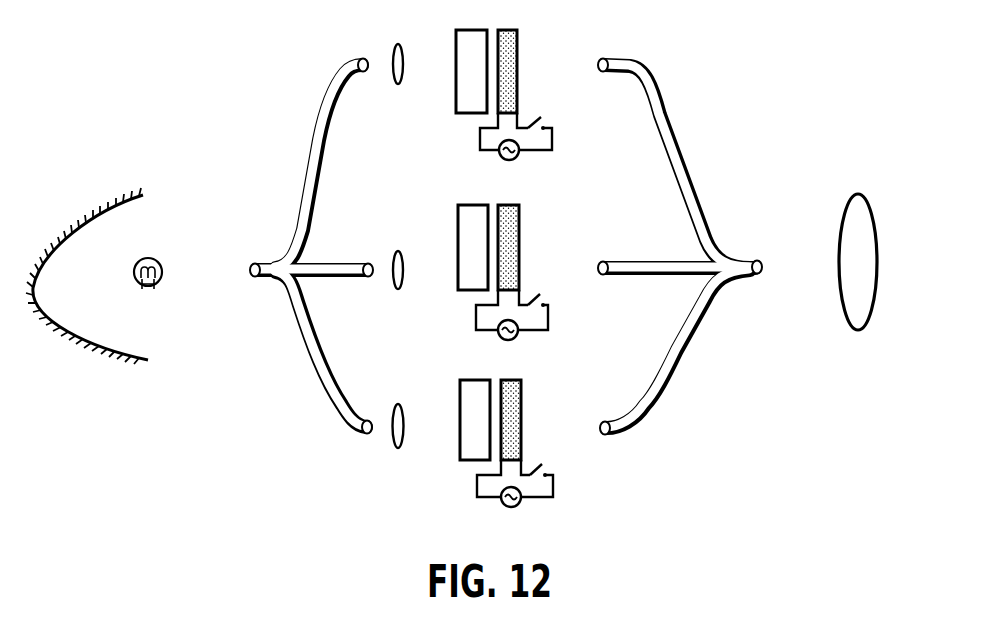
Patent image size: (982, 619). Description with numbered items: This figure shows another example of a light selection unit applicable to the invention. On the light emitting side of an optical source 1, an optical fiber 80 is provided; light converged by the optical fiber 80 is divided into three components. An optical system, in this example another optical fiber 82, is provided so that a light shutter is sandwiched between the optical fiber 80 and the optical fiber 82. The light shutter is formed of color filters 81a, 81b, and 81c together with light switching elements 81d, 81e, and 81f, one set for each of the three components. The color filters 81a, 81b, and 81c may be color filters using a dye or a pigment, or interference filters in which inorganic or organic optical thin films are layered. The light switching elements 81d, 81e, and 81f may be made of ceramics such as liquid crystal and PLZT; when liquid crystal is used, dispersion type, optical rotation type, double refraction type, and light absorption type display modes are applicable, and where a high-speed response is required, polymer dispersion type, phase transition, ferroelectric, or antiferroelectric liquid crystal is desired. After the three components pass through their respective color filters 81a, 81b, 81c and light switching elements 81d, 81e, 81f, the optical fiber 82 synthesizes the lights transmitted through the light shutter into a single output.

The optical source 1 is at (115, 197).
The optical fiber 80 is at (315, 135).
The color filter 81a is at (457, 90).
The color filter 81b is at (458, 227).
The color filter 81c is at (460, 388).
The light switching element 81d is at (520, 63).
The light switching element 81e is at (520, 237).
The light switching element 81f is at (522, 408).
The optical fiber 82 is at (690, 155).